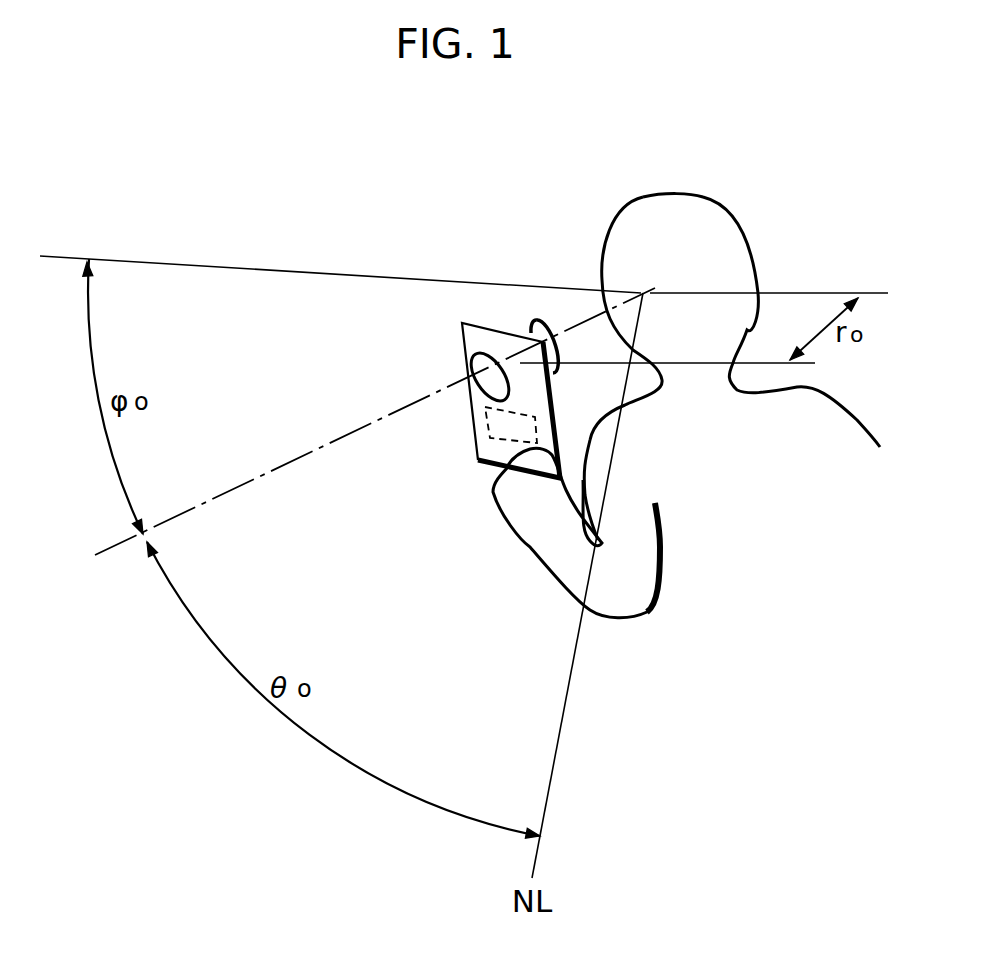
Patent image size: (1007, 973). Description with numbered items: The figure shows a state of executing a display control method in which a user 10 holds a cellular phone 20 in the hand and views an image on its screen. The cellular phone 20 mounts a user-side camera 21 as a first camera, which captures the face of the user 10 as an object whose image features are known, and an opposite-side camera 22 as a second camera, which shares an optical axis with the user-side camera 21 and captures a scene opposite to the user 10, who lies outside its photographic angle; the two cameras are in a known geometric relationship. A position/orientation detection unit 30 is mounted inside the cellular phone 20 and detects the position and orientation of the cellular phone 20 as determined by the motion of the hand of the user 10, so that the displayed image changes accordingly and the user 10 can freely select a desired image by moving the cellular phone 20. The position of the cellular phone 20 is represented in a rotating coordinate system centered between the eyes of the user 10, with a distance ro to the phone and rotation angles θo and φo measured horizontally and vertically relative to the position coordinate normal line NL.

The user 10 is at (695, 223).
The cellular phone 20 is at (483, 361).
The user-side camera 21 is at (544, 322).
The opposite-side camera 22 is at (481, 352).
The position/orientation detection unit 30 is at (500, 423).